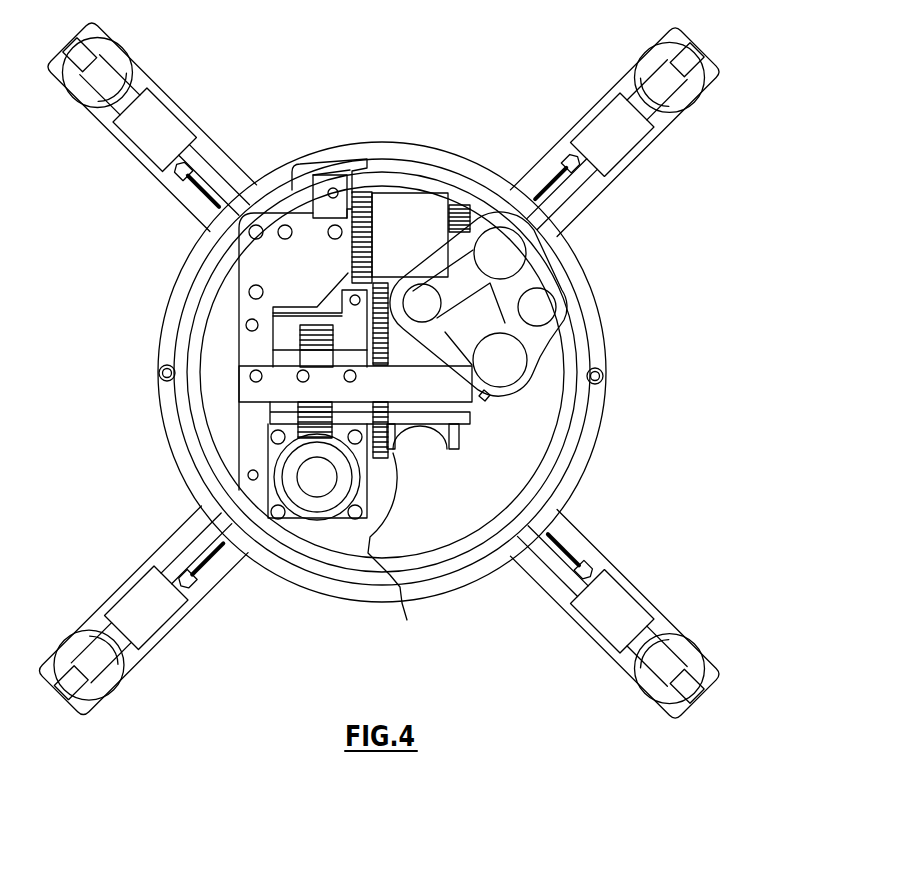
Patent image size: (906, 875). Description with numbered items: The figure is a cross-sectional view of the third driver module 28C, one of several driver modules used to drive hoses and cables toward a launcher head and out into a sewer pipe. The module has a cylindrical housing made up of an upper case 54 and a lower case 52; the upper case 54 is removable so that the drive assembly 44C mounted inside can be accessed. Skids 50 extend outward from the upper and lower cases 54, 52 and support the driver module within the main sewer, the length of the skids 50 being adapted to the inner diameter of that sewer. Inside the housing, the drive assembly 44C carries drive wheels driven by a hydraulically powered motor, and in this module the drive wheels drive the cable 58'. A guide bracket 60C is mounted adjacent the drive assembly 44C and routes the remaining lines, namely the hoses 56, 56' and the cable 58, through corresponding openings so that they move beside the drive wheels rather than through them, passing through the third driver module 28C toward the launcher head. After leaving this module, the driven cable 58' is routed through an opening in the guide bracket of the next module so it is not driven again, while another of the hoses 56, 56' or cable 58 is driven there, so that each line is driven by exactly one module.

The third driver module 28C is at (603, 319).
The drive assembly 44C is at (218, 362).
The skids 50 is at (130, 98).
The lower case 52 is at (407, 620).
The upper case 54 is at (470, 172).
The hose 56 is at (505, 398).
The hose 56' is at (554, 253).
The cable 58 is at (576, 293).
The cable 58' is at (439, 390).
The guide bracket 60C is at (535, 378).